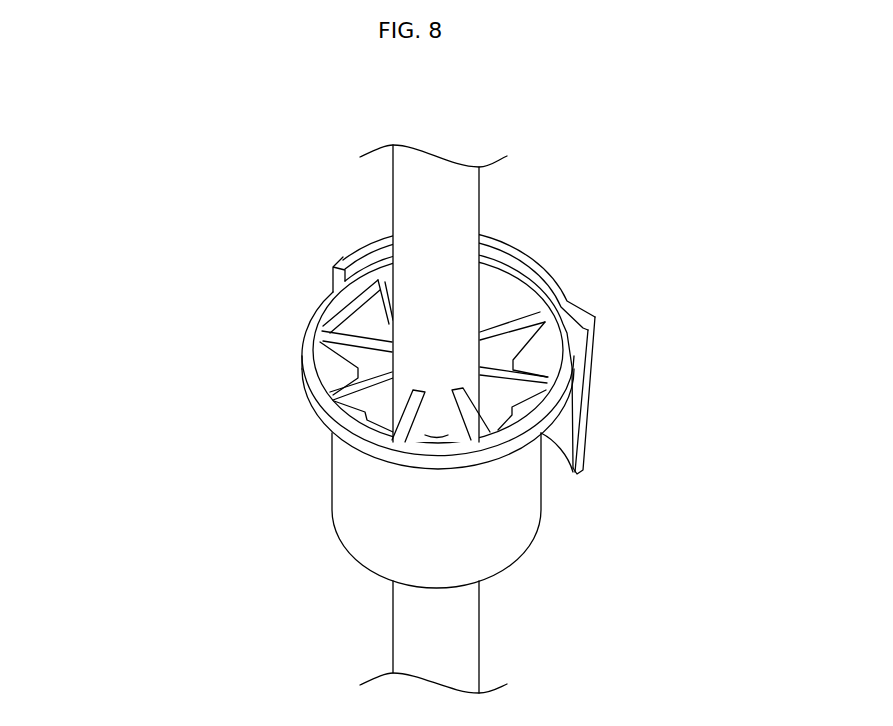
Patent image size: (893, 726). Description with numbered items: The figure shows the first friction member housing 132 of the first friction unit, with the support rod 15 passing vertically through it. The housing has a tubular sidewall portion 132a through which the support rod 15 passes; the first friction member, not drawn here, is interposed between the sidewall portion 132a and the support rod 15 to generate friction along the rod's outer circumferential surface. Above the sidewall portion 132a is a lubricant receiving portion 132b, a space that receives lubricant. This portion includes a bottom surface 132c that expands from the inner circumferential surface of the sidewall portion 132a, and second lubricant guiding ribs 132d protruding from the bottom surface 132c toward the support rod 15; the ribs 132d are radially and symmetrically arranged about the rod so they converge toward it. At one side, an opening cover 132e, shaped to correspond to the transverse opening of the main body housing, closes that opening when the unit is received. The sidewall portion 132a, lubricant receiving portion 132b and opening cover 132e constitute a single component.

The support rod 15 is at (427, 210).
The first friction member housing 132 is at (393, 417).
The tubular sidewall portion 132a is at (367, 507).
The lubricant receiving portion 132b is at (193, 230).
The bottom surface 132c is at (350, 362).
The second lubricant guiding ribs 132d is at (328, 330).
The opening cover 132e is at (552, 275).